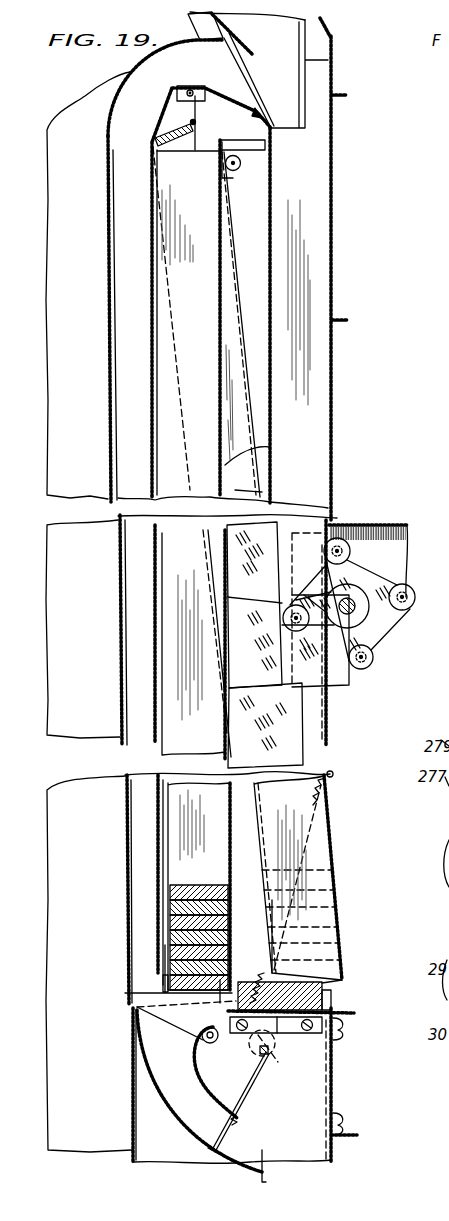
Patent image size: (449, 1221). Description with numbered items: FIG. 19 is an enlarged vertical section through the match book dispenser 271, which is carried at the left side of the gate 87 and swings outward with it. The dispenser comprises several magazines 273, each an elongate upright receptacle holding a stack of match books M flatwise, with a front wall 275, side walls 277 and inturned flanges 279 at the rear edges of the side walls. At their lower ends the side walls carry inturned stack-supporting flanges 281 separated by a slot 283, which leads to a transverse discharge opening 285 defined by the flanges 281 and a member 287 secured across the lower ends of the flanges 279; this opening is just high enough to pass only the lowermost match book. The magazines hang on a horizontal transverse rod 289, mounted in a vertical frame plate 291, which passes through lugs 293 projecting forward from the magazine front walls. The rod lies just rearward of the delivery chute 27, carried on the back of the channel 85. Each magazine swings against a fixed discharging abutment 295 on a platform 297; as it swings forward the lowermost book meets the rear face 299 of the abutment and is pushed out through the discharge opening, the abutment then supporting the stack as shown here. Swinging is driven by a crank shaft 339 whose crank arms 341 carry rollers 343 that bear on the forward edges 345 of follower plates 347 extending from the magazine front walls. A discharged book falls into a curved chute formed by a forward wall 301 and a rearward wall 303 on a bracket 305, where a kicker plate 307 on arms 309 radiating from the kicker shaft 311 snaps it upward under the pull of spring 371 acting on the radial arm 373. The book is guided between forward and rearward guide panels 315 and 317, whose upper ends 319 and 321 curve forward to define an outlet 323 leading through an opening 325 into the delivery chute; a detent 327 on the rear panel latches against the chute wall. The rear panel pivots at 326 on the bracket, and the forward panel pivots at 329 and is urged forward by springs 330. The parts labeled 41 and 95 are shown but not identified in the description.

The housing wall 41 is at (85, 102).
The upper end of rear panel 321 is at (143, 62).
The rearward guide panel 317 is at (110, 409).
The detent 327 is at (234, 36).
The opening in rear wall of delivery chute 325 is at (248, 60).
The outlet 323 is at (252, 78).
The delivery chute 27 is at (310, 210).
The channel 85 is at (340, 318).
The upper end of forward panel 319 is at (232, 88).
The pivot of forward panel 329 is at (189, 91).
The springs 330 is at (175, 132).
The vertical frame plate 291 is at (232, 141).
The lugs 293 is at (240, 159).
The horizontal transverse rod 289 is at (236, 173).
The forward guide panel 315 is at (152, 352).
The side walls 277 is at (232, 360).
The inturned flanges 279 is at (160, 373).
The front wall 275 is at (260, 458).
The gate 87 is at (346, 527).
The match book dispenser 271 is at (348, 729).
The follower plates 347 is at (282, 670).
The forward edges of follower plates 345 is at (357, 680).
The crank arms 341 is at (357, 567).
The rollers 343 is at (327, 548).
The crank shaft 339 is at (356, 609).
The magazines 273 is at (232, 876).
The match books M is at (200, 917).
The member 287 is at (163, 963).
The stack-supporting flanges 281 is at (165, 980).
The discharge opening 285 is at (125, 993).
The slot 283 is at (200, 992).
The spring 371 is at (251, 976).
The match book discharging abutments 295 is at (334, 996).
The platform 297 is at (276, 1031).
The rear face of abutment 299 is at (255, 1044).
The kicker shaft 311 is at (270, 1050).
The radial arm 373 is at (255, 1052).
The pivot of rear panel 326 is at (209, 1031).
The curved forward wall 301 is at (205, 1070).
The arms 309 is at (250, 1080).
The kicker plate 307 is at (215, 1140).
The curved rearward wall 303 is at (184, 1143).
The bracket 305 is at (133, 1125).
The frame post 95 is at (337, 1065).